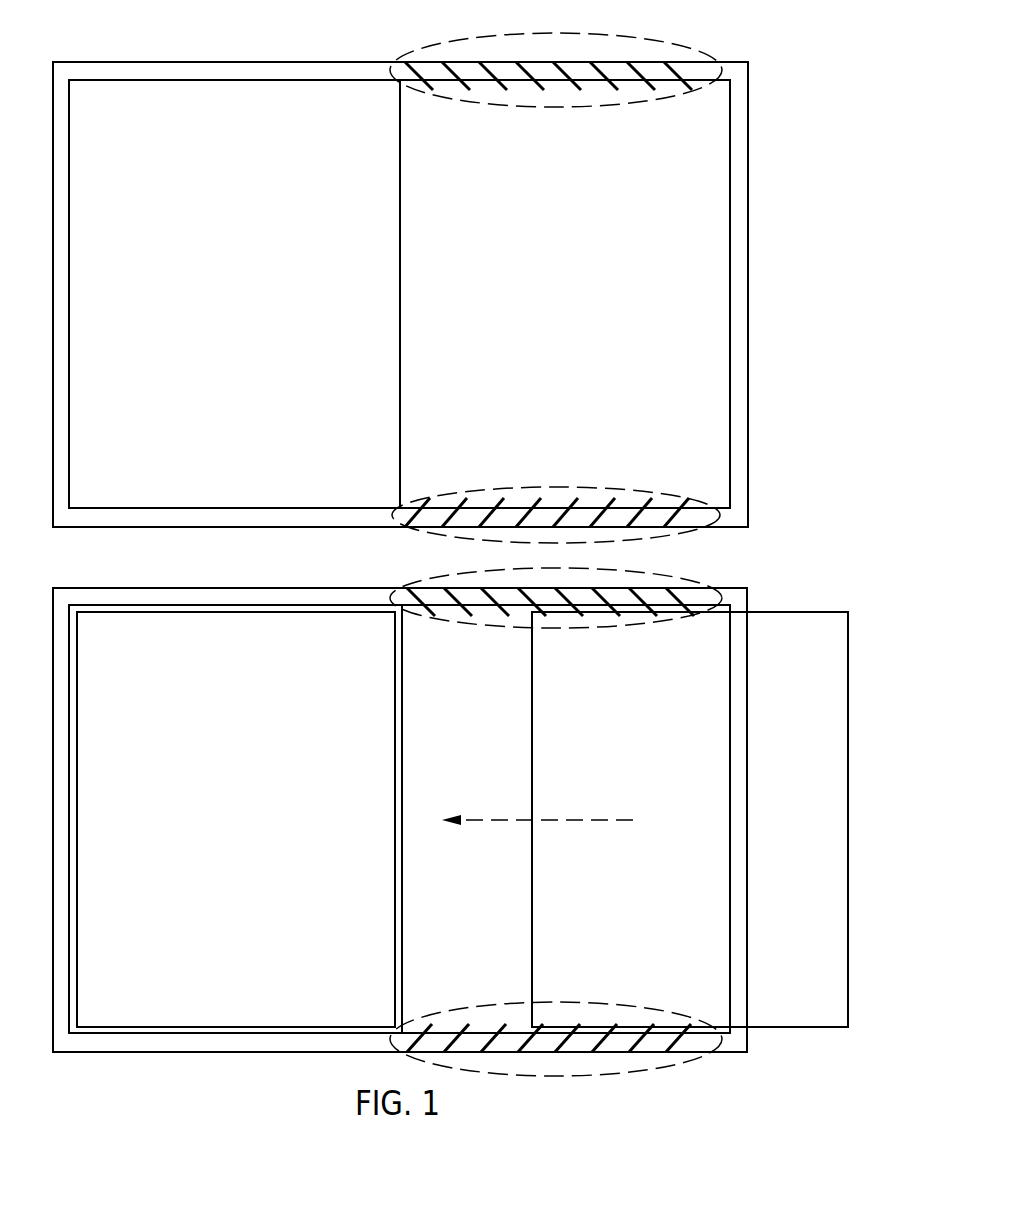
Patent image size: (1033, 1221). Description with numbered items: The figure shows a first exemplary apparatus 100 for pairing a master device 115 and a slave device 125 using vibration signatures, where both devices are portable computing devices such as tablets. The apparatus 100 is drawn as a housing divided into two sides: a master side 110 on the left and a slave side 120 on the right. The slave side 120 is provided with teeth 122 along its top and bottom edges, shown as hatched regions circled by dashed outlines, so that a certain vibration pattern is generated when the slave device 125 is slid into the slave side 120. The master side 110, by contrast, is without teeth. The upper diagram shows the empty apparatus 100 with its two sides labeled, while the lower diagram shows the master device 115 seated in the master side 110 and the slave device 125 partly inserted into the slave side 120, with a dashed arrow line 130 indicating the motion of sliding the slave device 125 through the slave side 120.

The apparatus 100 is at (127, 62).
The master side 110 is at (238, 157).
The slave side 120 is at (573, 157).
The teeth 122 is at (647, 42).
The master device 115 is at (248, 695).
The slave device 125 is at (702, 695).
The dashed arrow line 130 is at (497, 822).